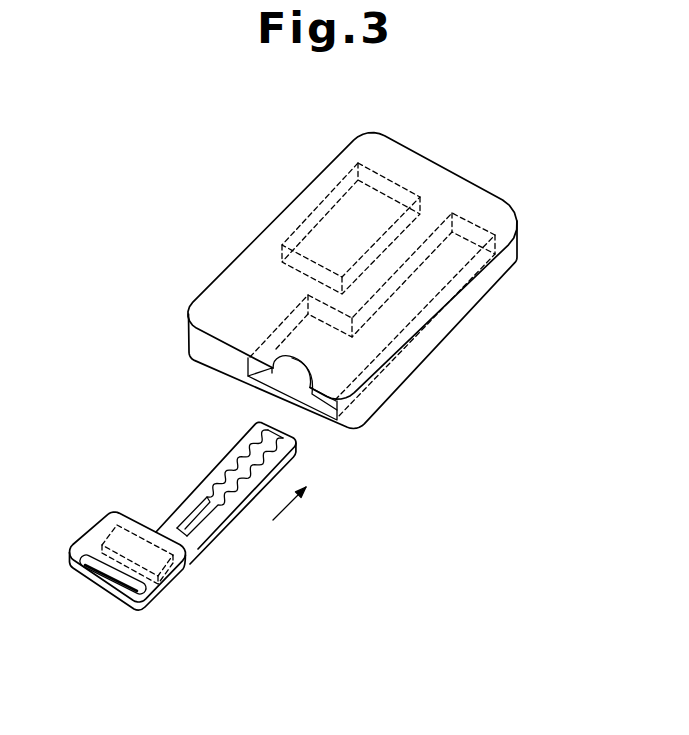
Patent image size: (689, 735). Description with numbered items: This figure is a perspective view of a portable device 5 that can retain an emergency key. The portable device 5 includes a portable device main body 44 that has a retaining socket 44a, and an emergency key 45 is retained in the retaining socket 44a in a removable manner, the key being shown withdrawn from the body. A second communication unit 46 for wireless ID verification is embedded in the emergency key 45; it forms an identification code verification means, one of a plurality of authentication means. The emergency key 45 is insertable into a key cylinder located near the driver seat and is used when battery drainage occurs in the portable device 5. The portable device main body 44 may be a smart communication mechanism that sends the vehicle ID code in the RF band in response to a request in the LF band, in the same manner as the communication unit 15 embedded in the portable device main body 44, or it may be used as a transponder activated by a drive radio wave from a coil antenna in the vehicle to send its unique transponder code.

The portable device 5 is at (281, 170).
The communication unit 15 is at (391, 177).
The portable device main body 44 is at (232, 266).
The retaining socket 44a is at (337, 420).
The emergency key 45 is at (83, 534).
The second communication unit 46 is at (183, 587).